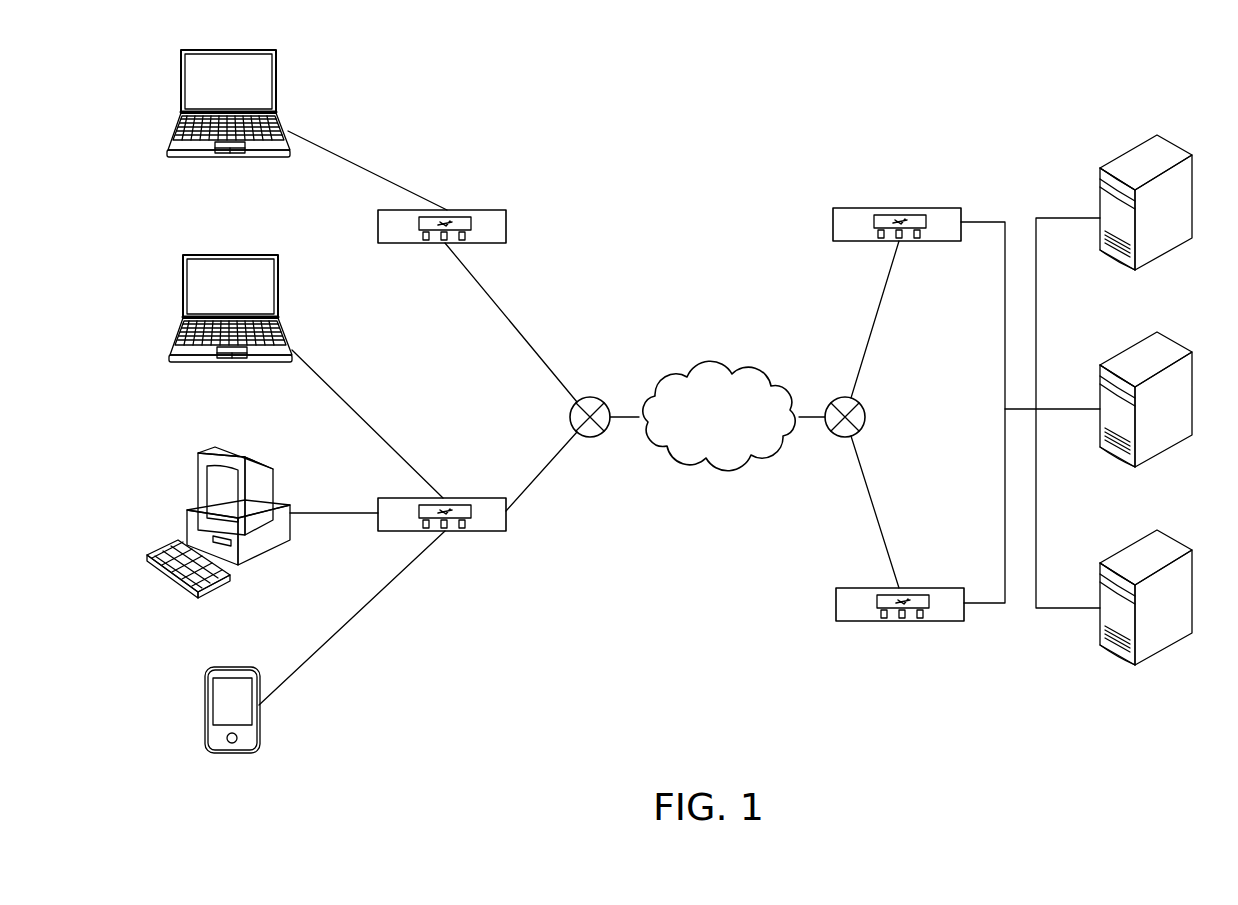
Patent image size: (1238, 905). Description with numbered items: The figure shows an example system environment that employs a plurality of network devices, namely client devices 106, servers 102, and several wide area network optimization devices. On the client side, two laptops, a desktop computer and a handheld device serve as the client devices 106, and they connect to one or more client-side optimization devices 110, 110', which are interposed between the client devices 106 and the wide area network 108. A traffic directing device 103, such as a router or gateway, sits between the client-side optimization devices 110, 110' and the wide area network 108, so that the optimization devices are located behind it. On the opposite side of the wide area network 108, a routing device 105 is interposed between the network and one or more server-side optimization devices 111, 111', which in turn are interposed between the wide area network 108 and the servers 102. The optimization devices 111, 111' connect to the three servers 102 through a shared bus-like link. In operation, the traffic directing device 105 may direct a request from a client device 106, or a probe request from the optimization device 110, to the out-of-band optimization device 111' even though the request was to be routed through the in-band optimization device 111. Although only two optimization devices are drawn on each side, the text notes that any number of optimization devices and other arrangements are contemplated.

The server 102 is at (1108, 265).
The traffic directing device 103 is at (571, 406).
The routing device 105 is at (865, 410).
The client device 106 is at (171, 146).
The wide area network 108 is at (757, 363).
The optimization device 110 is at (448, 498).
The optimization device 110' is at (451, 213).
The optimization device 111 is at (897, 210).
The optimization device 111' is at (909, 591).